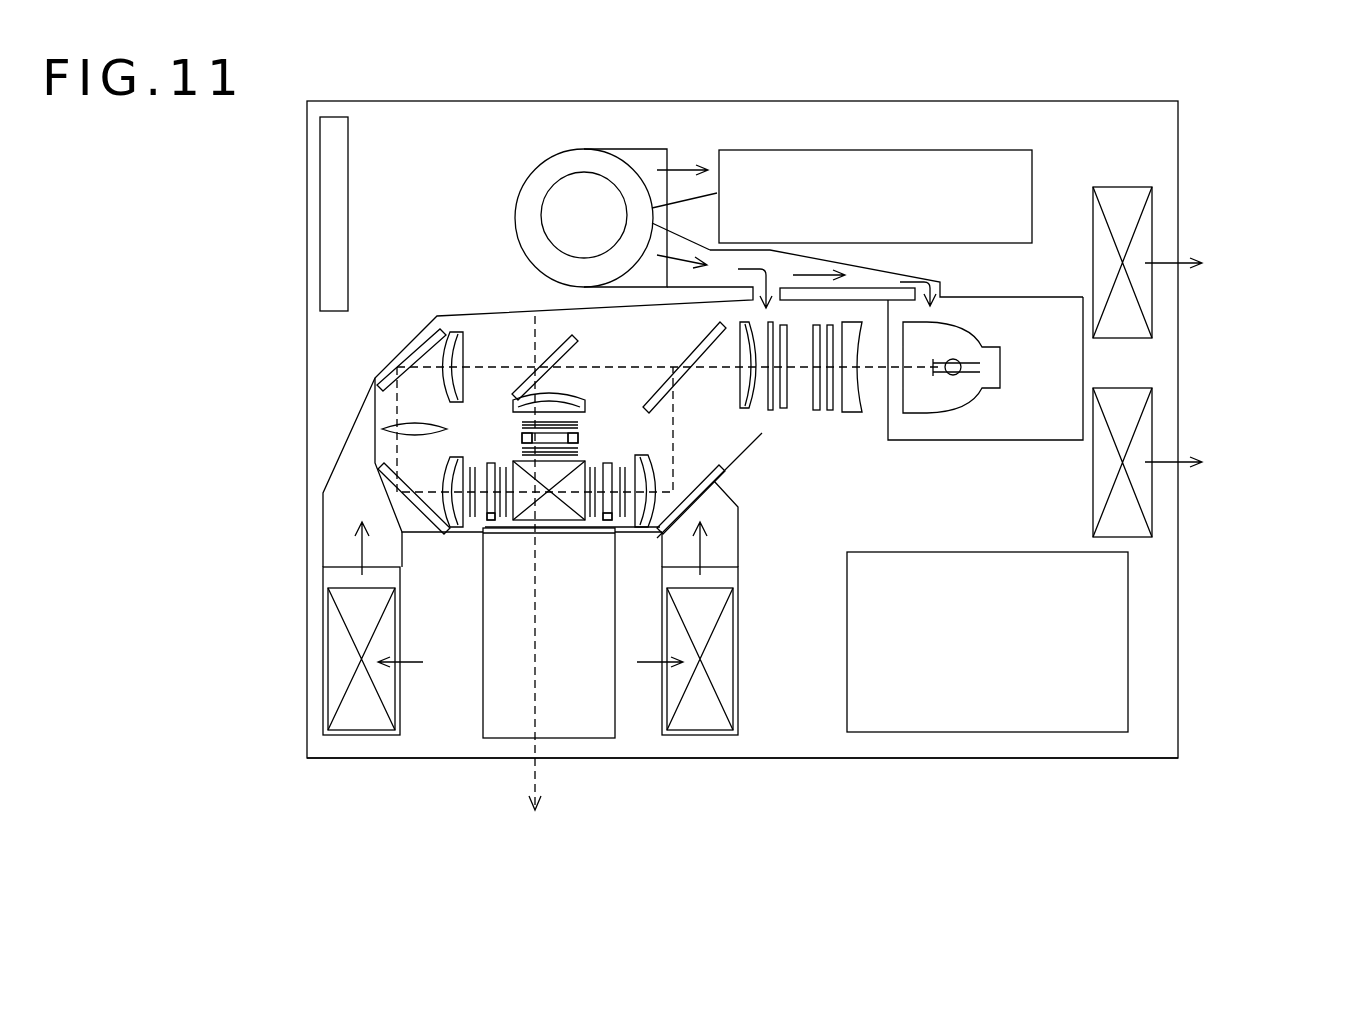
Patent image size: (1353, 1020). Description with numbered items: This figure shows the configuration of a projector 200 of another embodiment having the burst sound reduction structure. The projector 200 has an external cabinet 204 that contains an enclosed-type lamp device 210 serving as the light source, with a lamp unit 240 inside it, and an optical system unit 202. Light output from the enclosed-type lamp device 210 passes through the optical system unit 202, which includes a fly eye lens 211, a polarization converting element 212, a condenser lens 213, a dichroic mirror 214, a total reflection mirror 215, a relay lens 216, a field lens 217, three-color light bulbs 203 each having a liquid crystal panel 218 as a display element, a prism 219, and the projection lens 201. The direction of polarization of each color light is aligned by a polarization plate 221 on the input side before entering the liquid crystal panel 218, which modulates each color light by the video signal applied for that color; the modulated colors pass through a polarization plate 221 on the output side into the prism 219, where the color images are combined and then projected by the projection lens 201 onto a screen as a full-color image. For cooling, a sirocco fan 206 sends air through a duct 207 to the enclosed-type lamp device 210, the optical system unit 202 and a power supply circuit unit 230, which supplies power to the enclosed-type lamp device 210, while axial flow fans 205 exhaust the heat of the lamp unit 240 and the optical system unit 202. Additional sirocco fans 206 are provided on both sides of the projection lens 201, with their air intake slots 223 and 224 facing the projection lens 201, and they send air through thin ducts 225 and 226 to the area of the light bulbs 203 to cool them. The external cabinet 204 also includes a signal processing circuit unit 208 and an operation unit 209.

The projector 200 is at (1197, 136).
The projection lens 201 is at (508, 718).
The optical system unit 202 is at (590, 303).
The light bulbs 203 is at (494, 442).
The external cabinet 204 is at (816, 762).
The axial flow fans 205 is at (1145, 225).
The sirocco fan 206 is at (572, 162).
The duct 207 is at (703, 158).
The signal processing circuit unit 208 is at (995, 712).
The operation unit 209 is at (333, 212).
The enclosed-type lamp device 210 is at (990, 456).
The fly eye lens 211 is at (815, 410).
The polarization converting element 212 is at (770, 410).
The condenser lens 213 is at (747, 403).
The dichroic mirror 214 is at (555, 345).
The total reflection mirror 215 is at (382, 373).
The relay lens 216 is at (462, 330).
The field lens 217 is at (557, 403).
The liquid crystal panel 218 is at (580, 402).
The prism 219 is at (548, 516).
The polarization plate 221 is at (575, 415).
The air intake slot 223 is at (403, 680).
The air intake slot 224 is at (663, 682).
The thin duct 225 is at (345, 532).
The thin duct 226 is at (738, 552).
The power supply circuit unit 230 is at (872, 170).
The lamp unit 240 is at (960, 335).